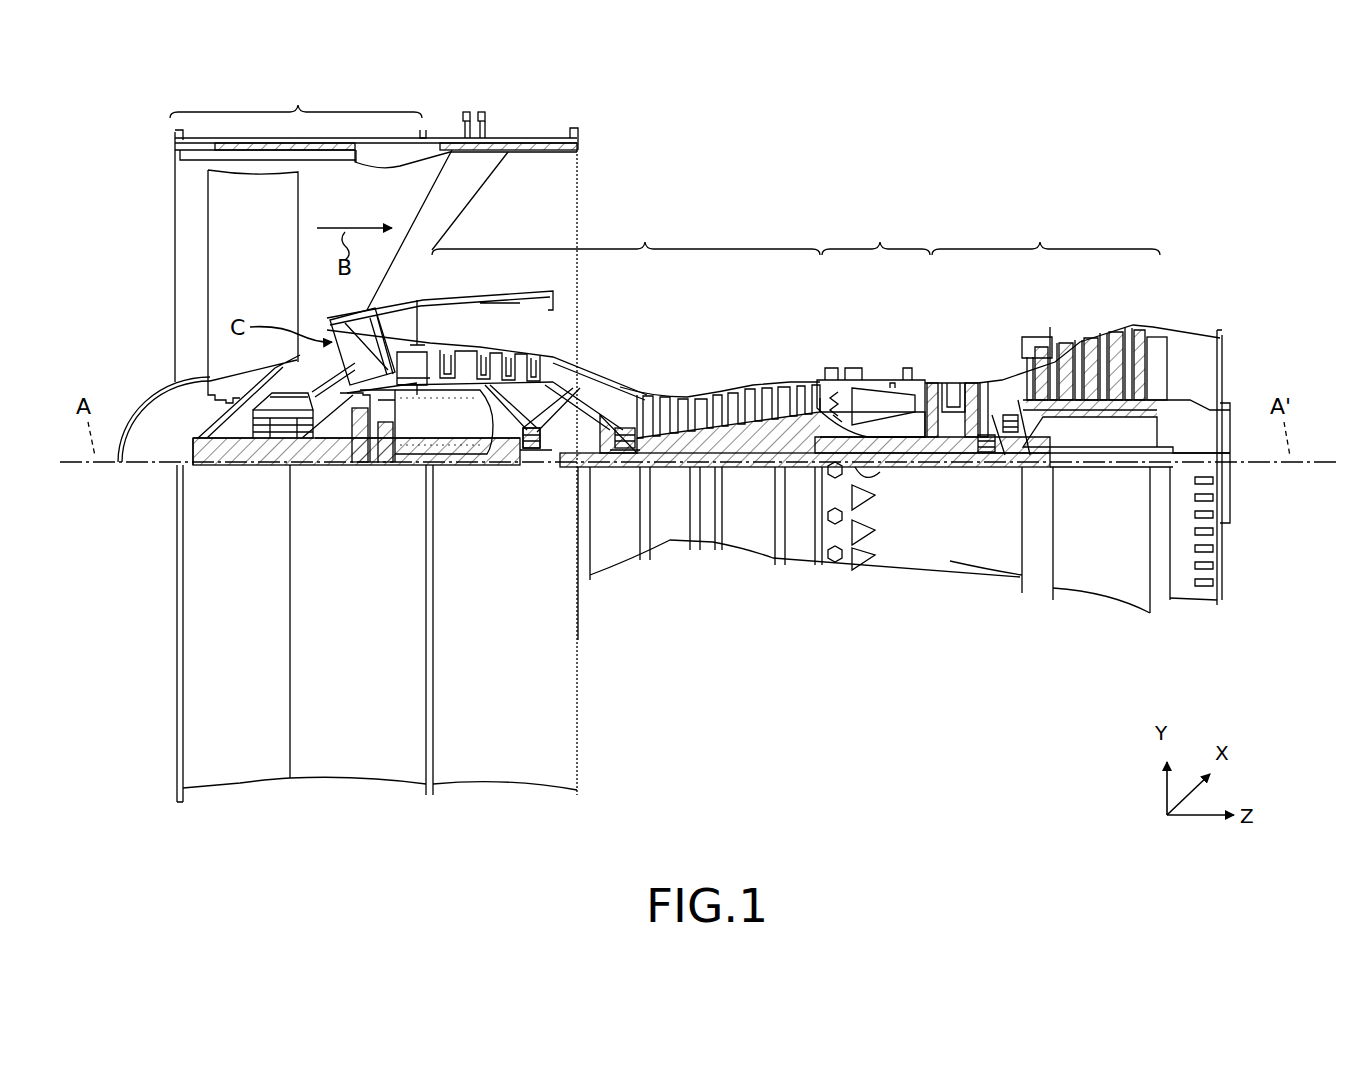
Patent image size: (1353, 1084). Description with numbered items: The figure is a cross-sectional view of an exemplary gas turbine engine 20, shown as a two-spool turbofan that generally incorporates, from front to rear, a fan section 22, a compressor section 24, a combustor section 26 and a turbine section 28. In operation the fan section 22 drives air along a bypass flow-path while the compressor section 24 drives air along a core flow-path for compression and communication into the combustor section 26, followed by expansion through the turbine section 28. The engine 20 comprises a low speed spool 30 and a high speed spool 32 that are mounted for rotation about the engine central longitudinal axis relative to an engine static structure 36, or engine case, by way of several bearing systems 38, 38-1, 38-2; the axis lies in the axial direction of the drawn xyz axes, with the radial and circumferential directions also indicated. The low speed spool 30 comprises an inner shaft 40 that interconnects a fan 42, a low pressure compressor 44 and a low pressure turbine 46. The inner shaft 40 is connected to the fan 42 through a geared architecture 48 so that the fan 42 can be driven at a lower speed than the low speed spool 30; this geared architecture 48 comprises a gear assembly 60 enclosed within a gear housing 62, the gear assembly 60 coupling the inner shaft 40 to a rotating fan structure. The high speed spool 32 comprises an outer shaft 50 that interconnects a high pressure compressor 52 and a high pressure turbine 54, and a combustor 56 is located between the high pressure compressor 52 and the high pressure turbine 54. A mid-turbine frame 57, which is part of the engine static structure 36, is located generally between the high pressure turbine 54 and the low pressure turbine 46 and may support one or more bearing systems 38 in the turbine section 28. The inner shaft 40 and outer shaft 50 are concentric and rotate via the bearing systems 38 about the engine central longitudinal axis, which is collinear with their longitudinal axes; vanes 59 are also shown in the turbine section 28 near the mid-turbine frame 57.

The gas turbine engine 20 is at (930, 178).
The fan section 22 is at (296, 96).
The compressor section 24 is at (626, 233).
The combustor section 26 is at (876, 233).
The turbine section 28 is at (1046, 233).
The low speed spool 30 is at (757, 472).
The high speed spool 32 is at (792, 430).
The engine static structure 36 is at (355, 762).
The bearing system 38 is at (990, 467).
The bearing system 38-1 is at (270, 438).
The bearing system 38-2 is at (520, 458).
The inner shaft 40 is at (600, 470).
The fan 42 is at (262, 274).
The low pressure compressor 44 is at (508, 356).
The low pressure turbine 46 is at (1098, 352).
The geared architecture 48 is at (386, 478).
The outer shaft 50 is at (880, 467).
The high pressure compressor 52 is at (735, 435).
The high pressure turbine 54 is at (950, 382).
The combustor 56 is at (877, 402).
The mid-turbine frame 57 is at (990, 380).
The airfoils 59 is at (1003, 385).
The gear assembly 60 is at (398, 448).
The gear housing 62 is at (397, 415).